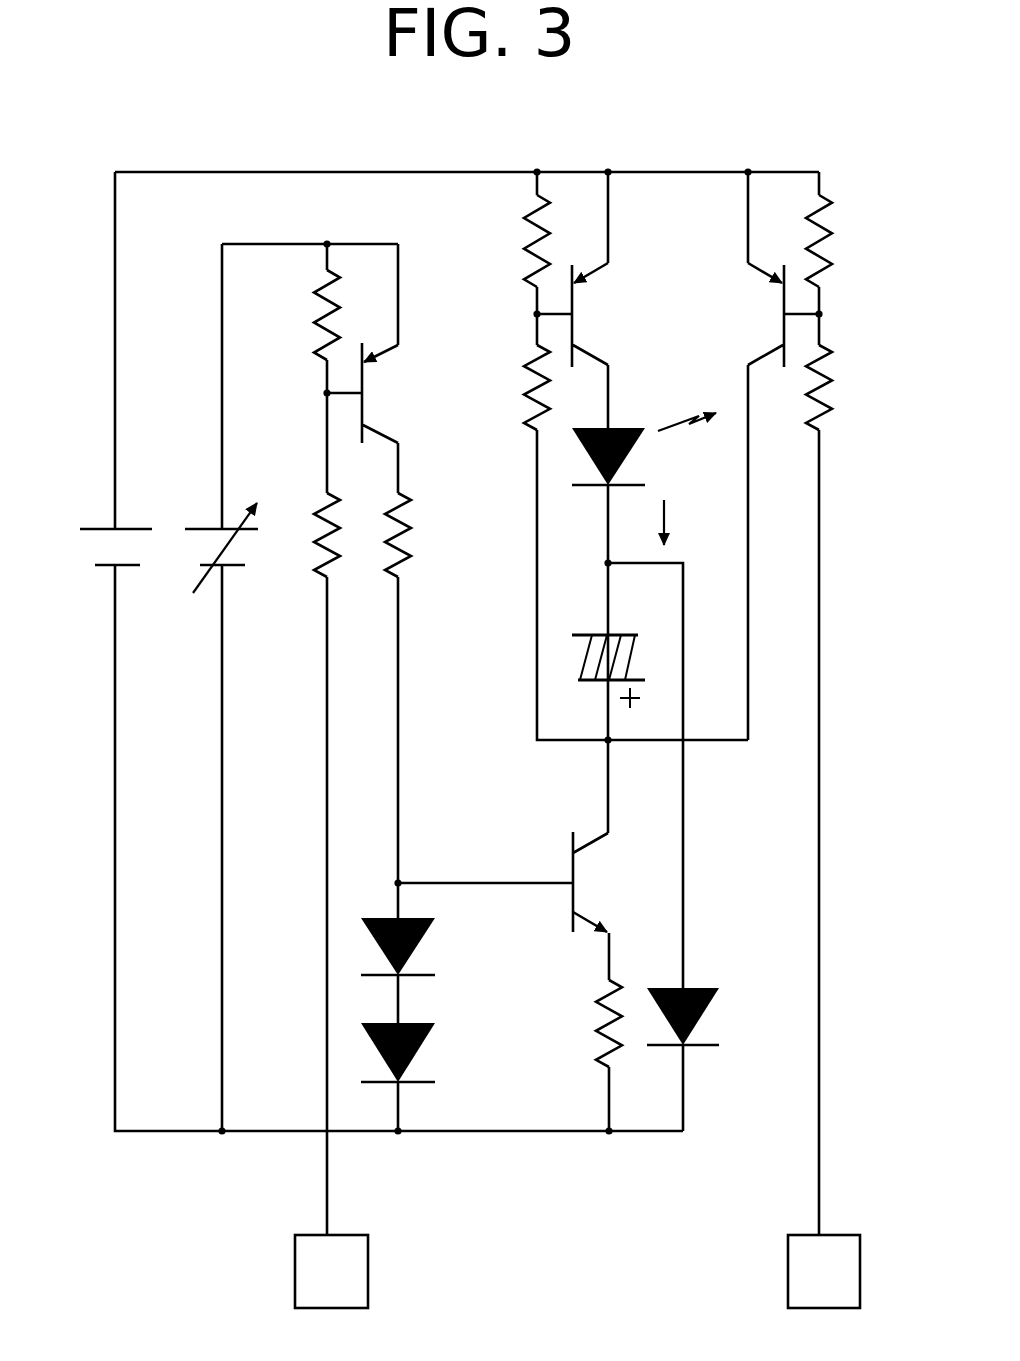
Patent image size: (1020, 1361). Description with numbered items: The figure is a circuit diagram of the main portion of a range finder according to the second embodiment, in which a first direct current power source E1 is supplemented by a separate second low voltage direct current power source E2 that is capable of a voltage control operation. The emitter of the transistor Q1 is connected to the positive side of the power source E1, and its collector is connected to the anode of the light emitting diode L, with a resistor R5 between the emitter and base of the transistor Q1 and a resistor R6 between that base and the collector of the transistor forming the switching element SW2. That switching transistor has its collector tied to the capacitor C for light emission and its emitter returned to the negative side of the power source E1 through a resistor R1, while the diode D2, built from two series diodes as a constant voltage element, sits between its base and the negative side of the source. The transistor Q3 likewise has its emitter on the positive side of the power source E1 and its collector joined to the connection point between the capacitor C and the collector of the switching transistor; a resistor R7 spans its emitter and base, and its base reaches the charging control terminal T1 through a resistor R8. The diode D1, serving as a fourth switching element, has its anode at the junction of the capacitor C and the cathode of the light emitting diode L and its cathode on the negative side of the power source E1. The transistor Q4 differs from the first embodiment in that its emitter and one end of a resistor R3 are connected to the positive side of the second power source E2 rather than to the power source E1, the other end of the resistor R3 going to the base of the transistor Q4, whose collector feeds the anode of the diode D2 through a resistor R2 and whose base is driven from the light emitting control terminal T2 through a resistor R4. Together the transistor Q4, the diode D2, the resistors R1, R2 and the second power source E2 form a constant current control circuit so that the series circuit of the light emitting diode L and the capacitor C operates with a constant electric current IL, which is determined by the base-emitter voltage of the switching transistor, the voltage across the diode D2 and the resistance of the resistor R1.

The first direct current power source E1 is at (109, 530).
The second direct current power source E2 is at (217, 544).
The resistor R1 is at (586, 1023).
The resistor R2 is at (424, 535).
The resistor R3 is at (303, 315).
The resistor R4 is at (311, 535).
The resistor R5 is at (513, 241).
The resistor R6 is at (513, 387).
The resistor R7 is at (842, 241).
The resistor R8 is at (842, 387).
The transistor Q1 is at (601, 315).
The transistor Q3 is at (754, 315).
The transistor Q4 is at (392, 393).
The second switching element SW2 is at (616, 882).
The diode D1 is at (725, 1030).
The diode D2 is at (422, 1000).
The capacitor for light emission C is at (619, 671).
The light emitting diode L is at (644, 449).
The electric current flowing through the light emitting diode IL is at (690, 528).
The charging control terminal T1 is at (824, 1271).
The light emitting control terminal T2 is at (331, 1271).